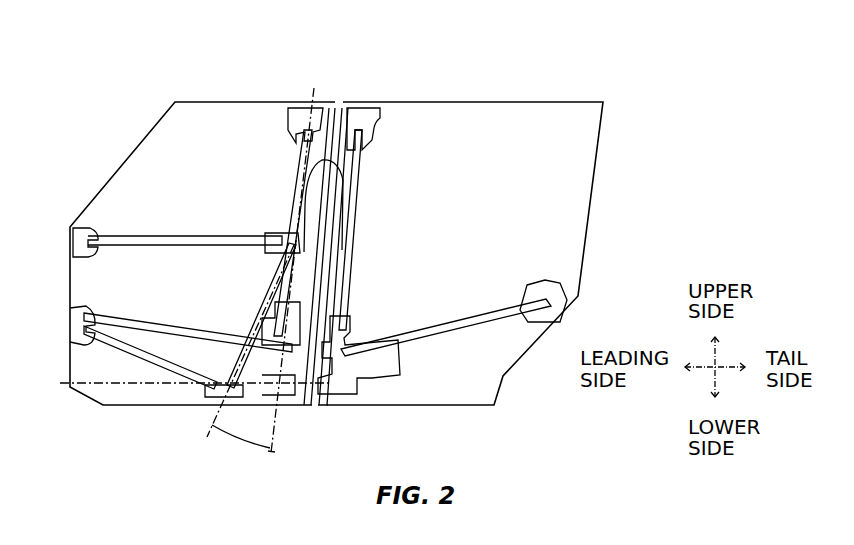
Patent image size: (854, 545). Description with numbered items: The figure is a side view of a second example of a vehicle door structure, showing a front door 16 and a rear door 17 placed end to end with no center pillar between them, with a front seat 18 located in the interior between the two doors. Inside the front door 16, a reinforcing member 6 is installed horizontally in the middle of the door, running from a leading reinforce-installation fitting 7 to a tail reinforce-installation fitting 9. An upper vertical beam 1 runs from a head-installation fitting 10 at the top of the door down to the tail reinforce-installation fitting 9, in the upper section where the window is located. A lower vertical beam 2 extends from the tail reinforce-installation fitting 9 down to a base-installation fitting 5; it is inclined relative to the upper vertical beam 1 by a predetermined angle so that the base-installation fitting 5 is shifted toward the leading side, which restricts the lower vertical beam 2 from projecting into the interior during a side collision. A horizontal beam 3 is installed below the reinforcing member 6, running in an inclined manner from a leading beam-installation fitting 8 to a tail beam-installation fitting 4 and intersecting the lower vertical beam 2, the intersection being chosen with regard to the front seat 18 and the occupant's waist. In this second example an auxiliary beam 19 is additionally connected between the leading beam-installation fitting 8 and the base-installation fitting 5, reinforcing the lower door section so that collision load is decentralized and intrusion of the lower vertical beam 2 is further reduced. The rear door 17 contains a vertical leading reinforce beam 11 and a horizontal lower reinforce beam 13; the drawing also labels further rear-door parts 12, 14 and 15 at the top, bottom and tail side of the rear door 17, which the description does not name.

The upper vertical beam 1 is at (296, 190).
The lower vertical beam 2 is at (276, 263).
The horizontal beam 3 is at (142, 325).
The tail beam-installation fitting 4 is at (290, 392).
The base-installation fitting 5 is at (212, 385).
The reinforcing member 6 is at (177, 232).
The leading reinforce-installation fitting 7 is at (72, 240).
The leading beam-installation fitting 8 is at (72, 327).
The tail reinforce-installation fitting 9 is at (275, 233).
The head-installation fitting 10 is at (300, 101).
The vertical leading reinforce beam 11 is at (350, 251).
The rod 12 is at (383, 118).
The horizontal lower reinforce beam 13 is at (420, 322).
The bracket 14 is at (378, 362).
The bracket 15 is at (543, 284).
The front door 16 is at (140, 107).
The rear door 17 is at (527, 88).
The front seat 18 is at (330, 163).
The auxiliary beam 19 is at (133, 353).